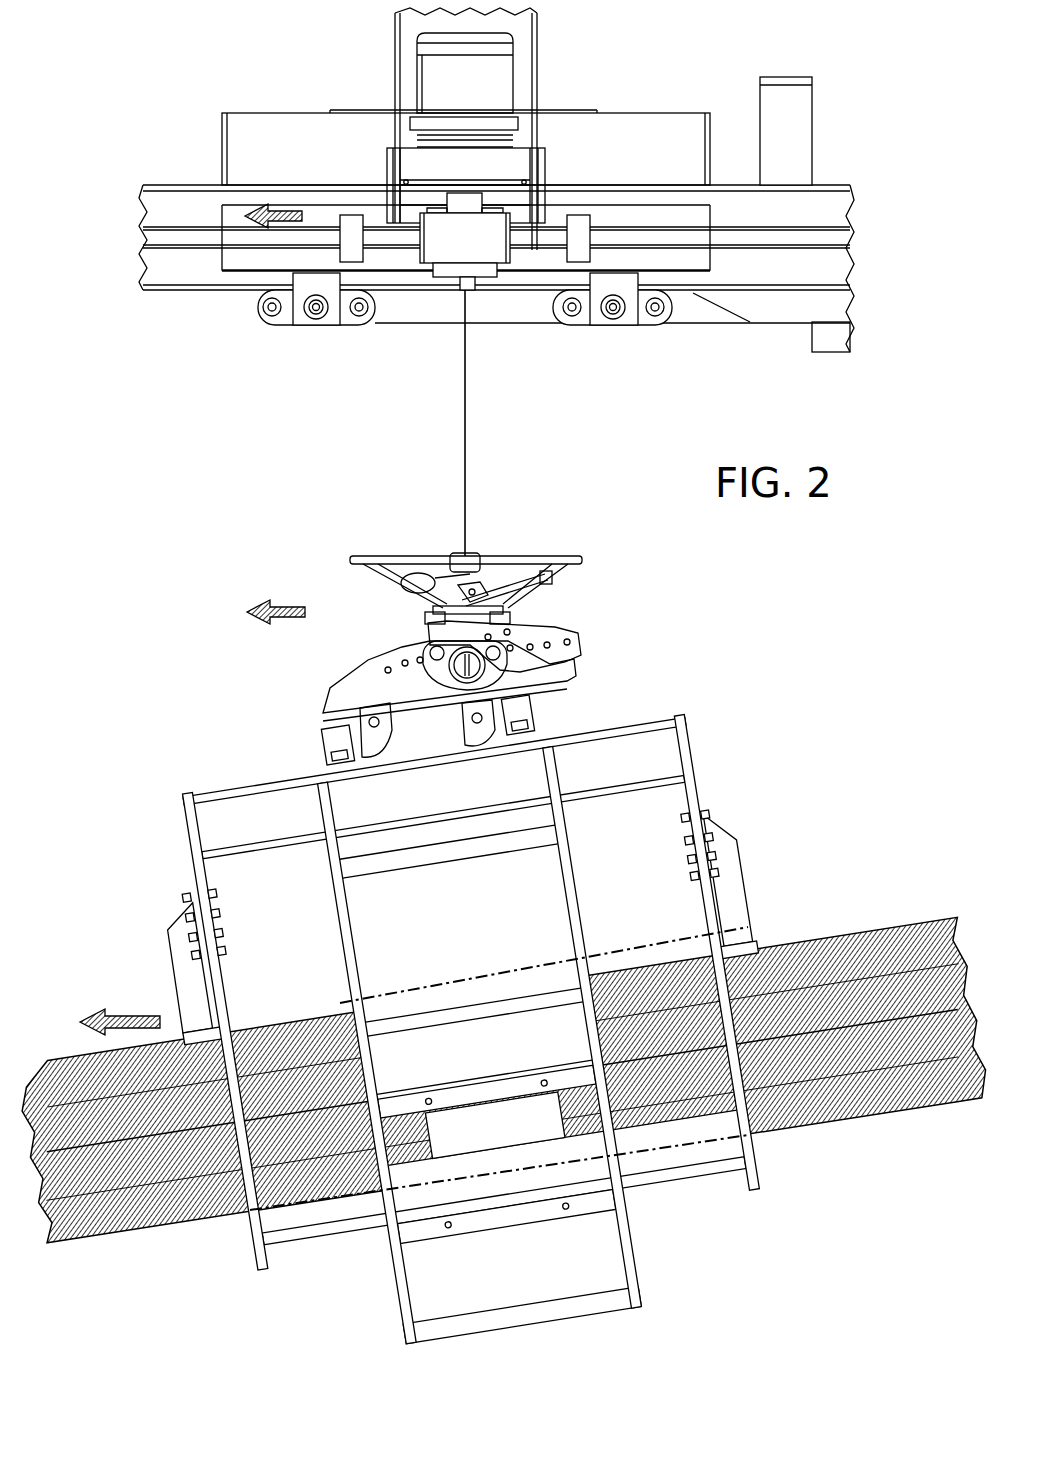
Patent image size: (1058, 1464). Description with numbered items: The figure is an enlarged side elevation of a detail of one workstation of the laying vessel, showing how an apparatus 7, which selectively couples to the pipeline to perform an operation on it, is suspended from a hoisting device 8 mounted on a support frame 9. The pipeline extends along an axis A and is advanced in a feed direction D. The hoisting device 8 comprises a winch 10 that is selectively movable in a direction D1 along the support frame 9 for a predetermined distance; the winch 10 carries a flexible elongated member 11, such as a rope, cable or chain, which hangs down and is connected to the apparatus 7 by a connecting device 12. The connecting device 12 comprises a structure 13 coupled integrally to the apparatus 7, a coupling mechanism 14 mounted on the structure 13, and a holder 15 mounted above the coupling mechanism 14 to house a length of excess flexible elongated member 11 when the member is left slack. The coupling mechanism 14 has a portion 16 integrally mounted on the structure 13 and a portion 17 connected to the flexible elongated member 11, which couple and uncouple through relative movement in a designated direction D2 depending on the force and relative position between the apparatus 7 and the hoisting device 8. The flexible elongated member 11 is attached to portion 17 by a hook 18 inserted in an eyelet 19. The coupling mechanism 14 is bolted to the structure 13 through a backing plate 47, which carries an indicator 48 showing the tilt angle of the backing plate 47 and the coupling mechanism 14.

The apparatus 7 is at (710, 768).
The hoisting device 8 is at (520, 352).
The support frame 9 is at (768, 203).
The winch 10 is at (454, 333).
The flexible elongated member 11 is at (466, 420).
The connecting device 12 is at (592, 620).
The structure 13 is at (358, 700).
The coupling mechanism 14 is at (420, 630).
The holder 15 is at (578, 556).
The portion 16 is at (416, 646).
The portion 17 is at (507, 605).
The hook 18 is at (479, 597).
The eyelet 19 is at (457, 598).
The backing plate 47 is at (445, 690).
The indicator 48 is at (485, 670).
The axis A is at (812, 1037).
The feed direction D is at (130, 1013).
The direction D1 is at (278, 206).
The direction D2 is at (292, 604).